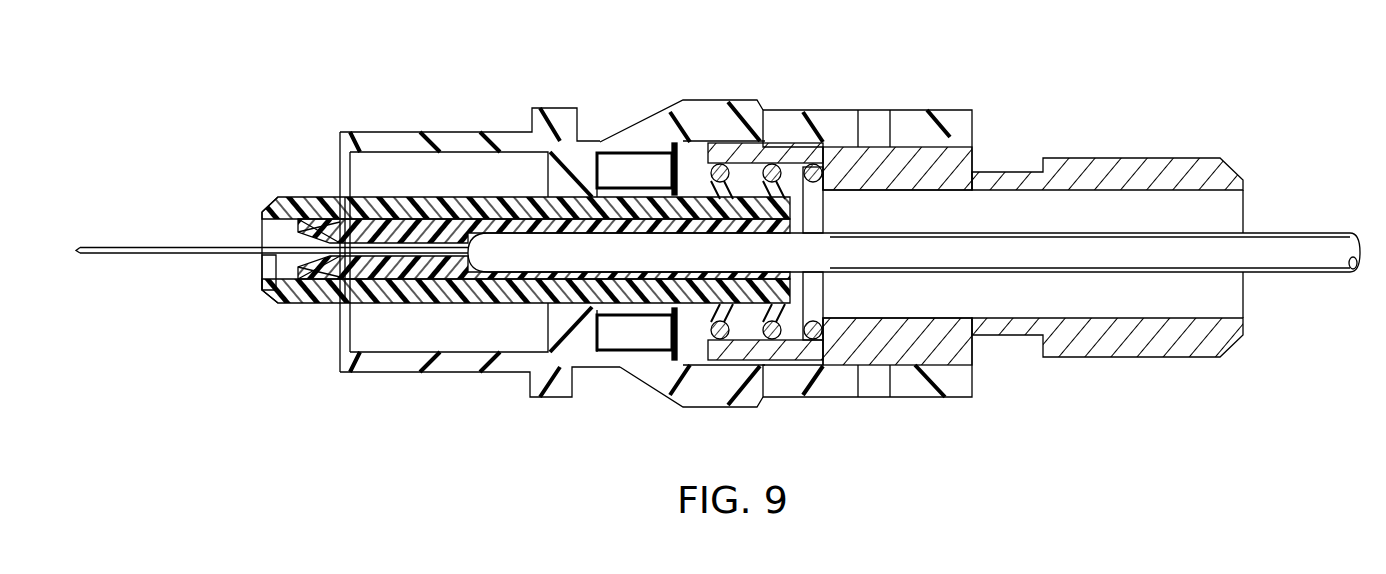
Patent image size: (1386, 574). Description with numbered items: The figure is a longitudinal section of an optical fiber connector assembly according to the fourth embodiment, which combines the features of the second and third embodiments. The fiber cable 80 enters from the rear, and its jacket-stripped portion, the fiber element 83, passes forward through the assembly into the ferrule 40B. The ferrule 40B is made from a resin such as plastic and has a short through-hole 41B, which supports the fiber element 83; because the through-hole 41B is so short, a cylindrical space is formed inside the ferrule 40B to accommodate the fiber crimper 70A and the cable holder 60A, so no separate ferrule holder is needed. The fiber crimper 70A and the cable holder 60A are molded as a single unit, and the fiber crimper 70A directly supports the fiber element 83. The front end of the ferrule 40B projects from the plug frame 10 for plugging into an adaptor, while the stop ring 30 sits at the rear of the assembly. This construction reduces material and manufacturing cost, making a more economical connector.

The plug frame 10 is at (832, 125).
The stop ring 30 is at (1107, 158).
The ferrule 40B is at (283, 213).
The through-hole 41B is at (268, 262).
The cable holder 60A is at (642, 195).
The fiber crimper 70A is at (370, 225).
The fiber cable 80 is at (1284, 232).
The fiber element 83 is at (300, 228).